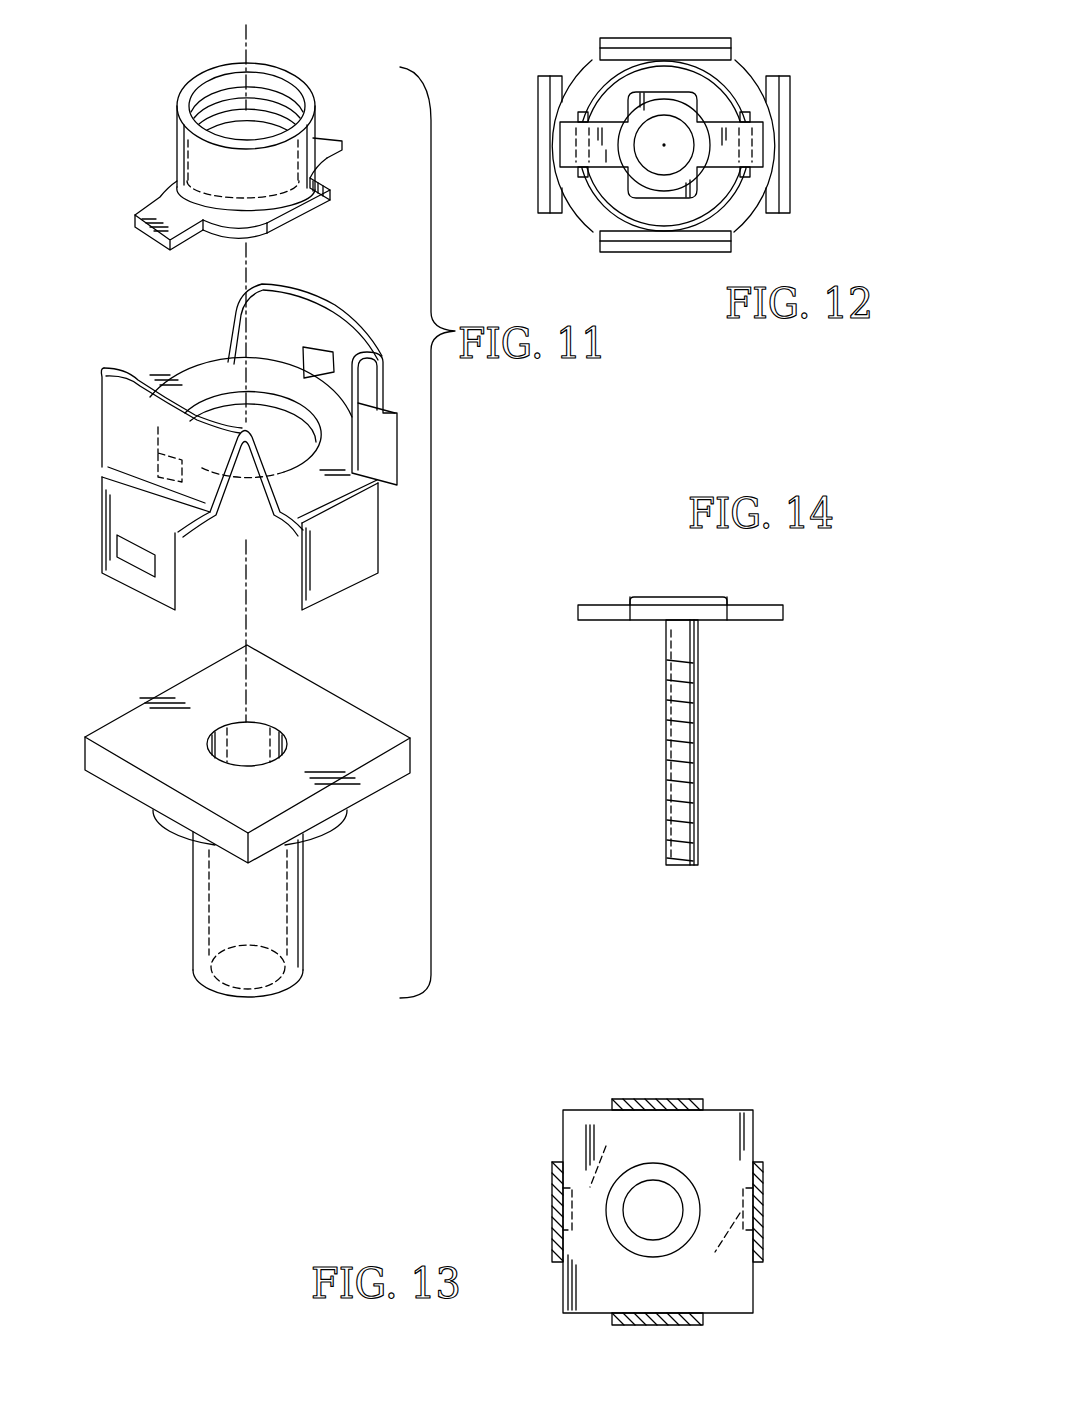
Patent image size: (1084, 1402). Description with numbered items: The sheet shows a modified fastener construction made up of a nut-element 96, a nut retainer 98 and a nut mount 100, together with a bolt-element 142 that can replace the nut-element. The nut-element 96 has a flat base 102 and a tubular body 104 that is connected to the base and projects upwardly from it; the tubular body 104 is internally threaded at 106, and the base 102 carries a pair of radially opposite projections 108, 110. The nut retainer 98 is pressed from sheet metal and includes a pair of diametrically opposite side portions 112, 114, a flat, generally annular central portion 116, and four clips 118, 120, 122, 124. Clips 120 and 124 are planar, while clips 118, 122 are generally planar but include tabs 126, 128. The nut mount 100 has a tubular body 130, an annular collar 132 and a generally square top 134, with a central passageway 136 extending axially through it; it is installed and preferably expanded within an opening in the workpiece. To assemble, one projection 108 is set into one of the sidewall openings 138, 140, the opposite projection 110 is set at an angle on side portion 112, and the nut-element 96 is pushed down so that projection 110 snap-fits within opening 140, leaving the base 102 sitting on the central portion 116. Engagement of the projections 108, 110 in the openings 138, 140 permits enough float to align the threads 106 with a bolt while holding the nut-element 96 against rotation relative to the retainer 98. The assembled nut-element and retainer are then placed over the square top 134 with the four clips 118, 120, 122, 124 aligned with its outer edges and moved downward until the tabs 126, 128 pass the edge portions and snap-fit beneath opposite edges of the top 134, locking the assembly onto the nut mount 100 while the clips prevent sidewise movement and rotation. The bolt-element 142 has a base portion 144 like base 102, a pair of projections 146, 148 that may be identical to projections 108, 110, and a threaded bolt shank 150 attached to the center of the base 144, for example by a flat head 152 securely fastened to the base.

In FIG. 11, the nut-element 96 is at (238, 148).
In FIG. 11, the nut retainer 98 is at (230, 454).
In FIG. 11, the nut mount 100 is at (247, 821).
In FIG. 11, the flat base 102 is at (318, 200).
In FIG. 12, the flat base 102 is at (656, 145).
In FIG. 11, the tubular body 104 is at (190, 147).
In FIG. 12, the tubular body 104 is at (640, 118).
In FIG. 11, the internal threads 106 is at (272, 85).
In FIG. 12, the internal threads 106 is at (687, 125).
In FIG. 11, the projection 108 is at (162, 227).
In FIG. 12, the projection 108 is at (568, 142).
In FIG. 11, the projection 110 is at (319, 110).
In FIG. 12, the projection 110 is at (762, 142).
In FIG. 11, the side portion 112 is at (122, 437).
In FIG. 11, the side portion 114 is at (306, 318).
In FIG. 11, the central portion 116 is at (192, 377).
In FIG. 12, the central portion 116 is at (663, 146).
In FIG. 13, the central portion 116 is at (658, 1211).
In FIG. 11, the clip 118 is at (125, 563).
In FIG. 12, the clip 118 is at (533, 180).
In FIG. 13, the clip 118 is at (550, 1205).
In FIG. 11, the clip 120 is at (357, 572).
In FIG. 12, the clip 120 is at (647, 255).
In FIG. 13, the clip 120 is at (680, 1325).
In FIG. 11, the clip 122 is at (398, 480).
In FIG. 12, the clip 122 is at (790, 197).
In FIG. 13, the clip 122 is at (765, 1203).
In FIG. 12, the clip 124 is at (707, 42).
In FIG. 13, the clip 124 is at (662, 1099).
In FIG. 11, the tab 126 is at (137, 557).
In FIG. 13, the tab 126 is at (606, 1146).
In FIG. 13, the tab 128 is at (714, 1246).
In FIG. 11, the tubular body 130 is at (198, 920).
In FIG. 11, the annular collar 132 is at (177, 837).
In FIG. 11, the square top 134 is at (247, 754).
In FIG. 11, the central passageway 136 is at (235, 732).
In FIG. 11, the sidewall opening 138 is at (152, 460).
In FIG. 11, the sidewall opening 140 is at (308, 357).
In FIG. 14, the bolt-element 142 is at (690, 704).
In FIG. 14, the base portion 144 is at (640, 613).
In FIG. 14, the projection 146 is at (602, 616).
In FIG. 14, the projection 148 is at (760, 613).
In FIG. 14, the threaded bolt shank 150 is at (700, 790).
In FIG. 14, the flat head 152 is at (675, 597).